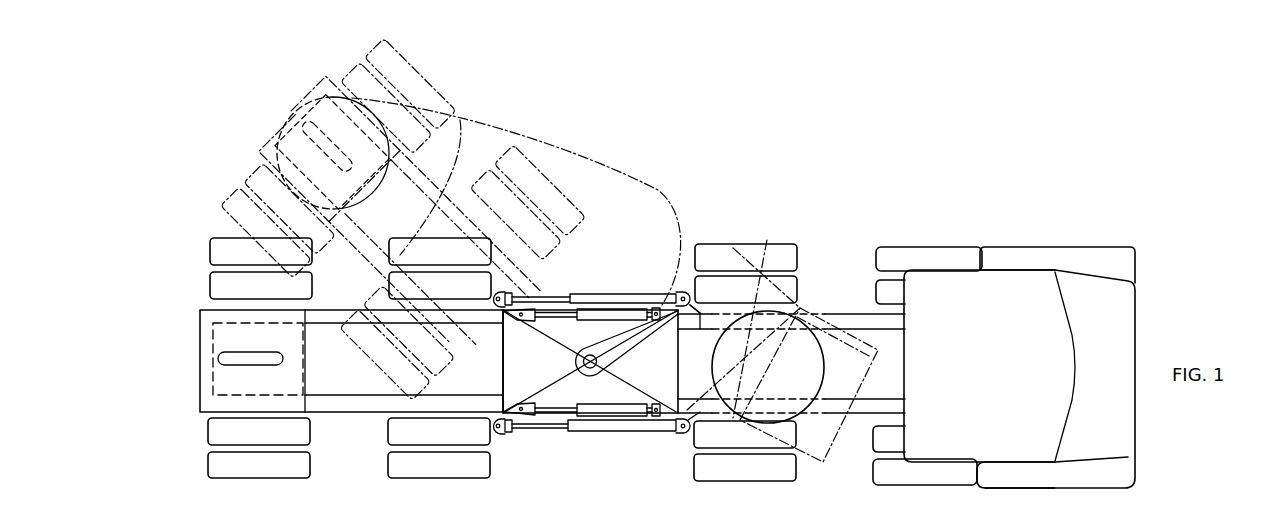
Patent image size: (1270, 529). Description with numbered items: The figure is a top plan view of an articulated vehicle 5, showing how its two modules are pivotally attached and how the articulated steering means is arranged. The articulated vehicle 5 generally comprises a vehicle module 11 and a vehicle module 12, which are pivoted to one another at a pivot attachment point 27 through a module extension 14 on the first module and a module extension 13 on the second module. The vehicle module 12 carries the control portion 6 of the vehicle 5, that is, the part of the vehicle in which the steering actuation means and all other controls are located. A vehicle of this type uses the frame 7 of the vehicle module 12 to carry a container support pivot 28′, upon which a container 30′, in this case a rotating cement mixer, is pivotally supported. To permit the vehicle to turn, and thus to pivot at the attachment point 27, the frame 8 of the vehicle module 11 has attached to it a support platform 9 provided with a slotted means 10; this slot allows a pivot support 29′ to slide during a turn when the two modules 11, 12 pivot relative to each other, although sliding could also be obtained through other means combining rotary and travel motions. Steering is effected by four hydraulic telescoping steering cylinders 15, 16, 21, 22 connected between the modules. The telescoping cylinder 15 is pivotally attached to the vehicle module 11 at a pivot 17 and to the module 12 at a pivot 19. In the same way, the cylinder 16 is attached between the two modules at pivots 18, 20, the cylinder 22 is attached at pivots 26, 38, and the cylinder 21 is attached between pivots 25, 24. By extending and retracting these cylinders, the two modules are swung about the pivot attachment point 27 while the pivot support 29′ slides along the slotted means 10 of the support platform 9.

The articulated vehicle 5 is at (1106, 245).
The control portion 6 is at (1024, 490).
The frame 7 is at (860, 313).
The frame 8 is at (340, 413).
The support platform 9 is at (225, 372).
The slotted means 10 is at (218, 358).
The vehicle module 11 is at (372, 417).
The vehicle module 12 is at (862, 420).
The module extension 13 is at (667, 397).
The module extension 14 is at (515, 387).
The hydraulic telescoping steering cylinder 15 is at (583, 432).
The hydraulic telescoping steering cylinder 16 is at (558, 413).
The pivot 17 is at (496, 434).
The pivot 18 is at (526, 414).
The pivot 19 is at (681, 434).
The pivot 20 is at (657, 414).
The hydraulic telescoping steering cylinder 21 is at (616, 295).
The hydraulic telescoping steering cylinder 22 is at (607, 303).
The pivot 24 is at (692, 301).
The pivot 25 is at (530, 310).
The pivot 26 is at (657, 311).
The pivot attachment point 27 is at (593, 370).
The container support pivot 28′ is at (780, 385).
The pivot support 29′ is at (357, 152).
The container 30′ is at (484, 148).
The pivot 38 is at (684, 296).